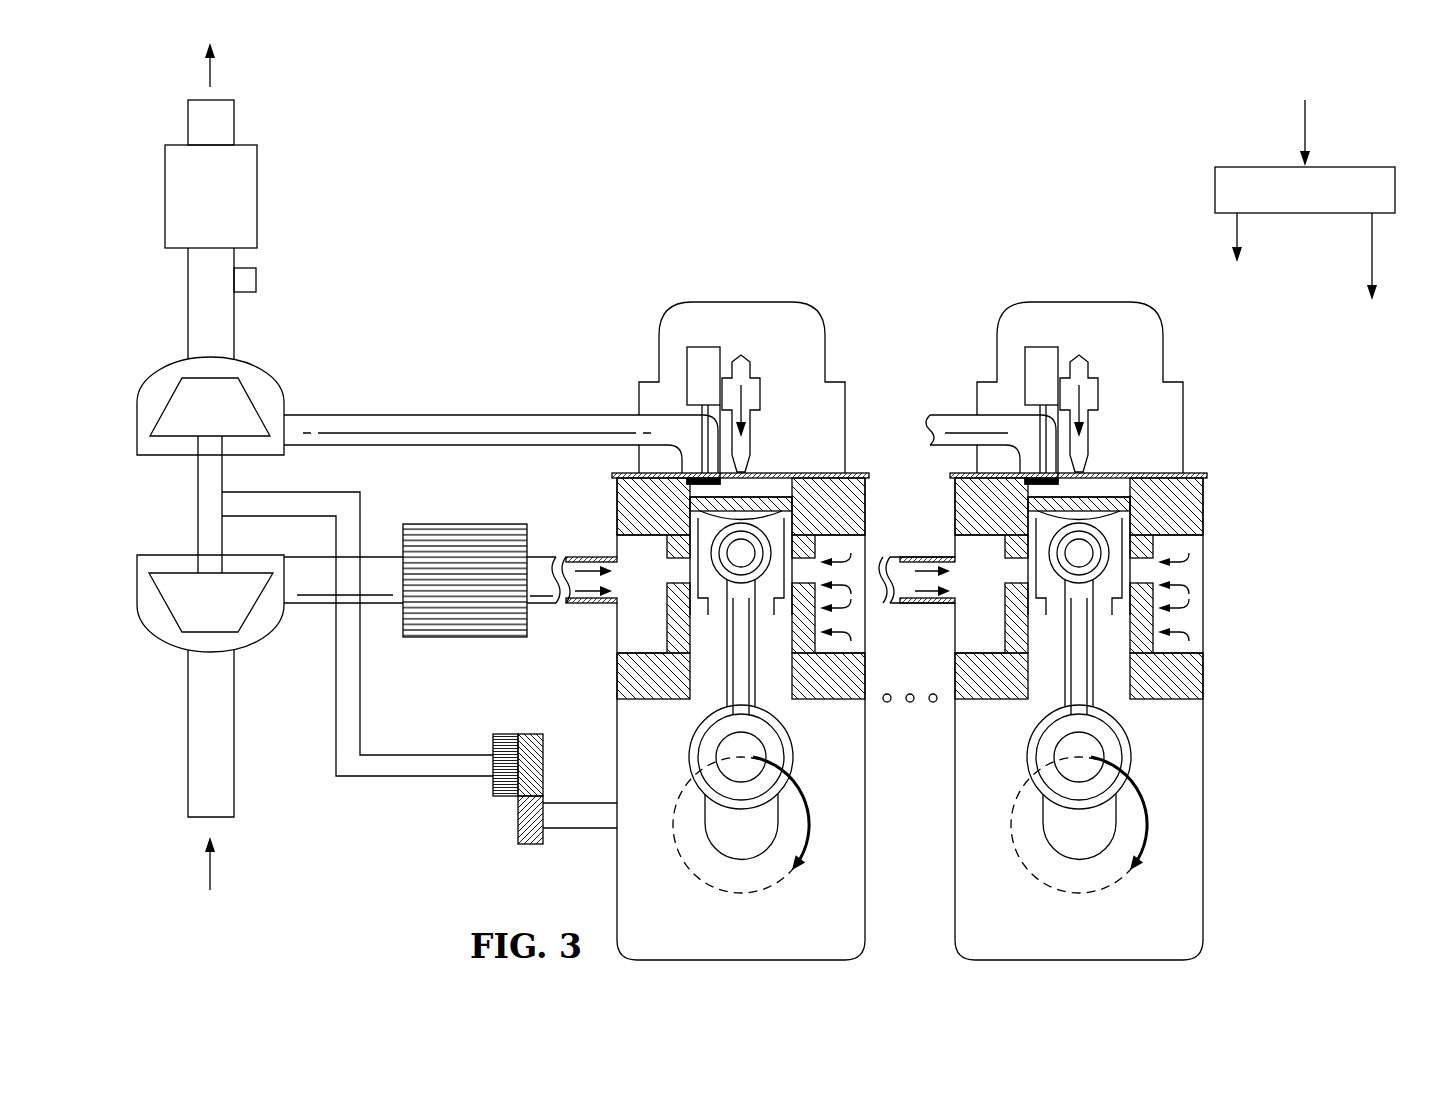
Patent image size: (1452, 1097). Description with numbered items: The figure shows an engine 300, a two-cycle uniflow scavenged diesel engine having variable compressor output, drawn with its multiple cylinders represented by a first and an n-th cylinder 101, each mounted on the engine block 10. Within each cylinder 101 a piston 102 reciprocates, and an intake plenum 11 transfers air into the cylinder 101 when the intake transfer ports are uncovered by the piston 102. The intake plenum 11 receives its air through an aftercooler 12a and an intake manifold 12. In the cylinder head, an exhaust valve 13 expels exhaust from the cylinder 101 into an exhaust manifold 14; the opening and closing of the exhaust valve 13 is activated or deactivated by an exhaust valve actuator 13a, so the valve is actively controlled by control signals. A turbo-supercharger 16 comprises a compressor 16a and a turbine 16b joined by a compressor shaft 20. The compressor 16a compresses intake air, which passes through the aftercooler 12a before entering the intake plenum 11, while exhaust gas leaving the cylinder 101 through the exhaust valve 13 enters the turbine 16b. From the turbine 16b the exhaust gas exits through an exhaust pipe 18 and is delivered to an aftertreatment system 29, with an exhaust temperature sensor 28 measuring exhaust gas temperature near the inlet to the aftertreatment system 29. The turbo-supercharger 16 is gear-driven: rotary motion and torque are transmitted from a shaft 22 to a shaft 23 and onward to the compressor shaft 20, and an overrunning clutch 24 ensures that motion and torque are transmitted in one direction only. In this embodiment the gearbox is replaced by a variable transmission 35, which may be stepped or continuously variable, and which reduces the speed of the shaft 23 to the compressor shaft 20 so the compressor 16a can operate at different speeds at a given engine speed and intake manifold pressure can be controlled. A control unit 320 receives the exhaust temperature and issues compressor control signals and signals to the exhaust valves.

The engine cylinder block 10 is at (866, 771).
The intake plenum 11 is at (857, 546).
The intake manifold 12 is at (548, 557).
The aftercooler 12a is at (436, 638).
The exhaust valve 13 is at (676, 430).
The exhaust valve actuator 13a is at (715, 345).
The exhaust manifold 14 is at (463, 415).
The turbo-supercharger 16 is at (122, 352).
The compressor 16a is at (232, 620).
The turbine 16b is at (232, 421).
The exhaust pipe 18 is at (187, 303).
The compressor shaft 20 is at (199, 500).
The shaft 22 is at (580, 829).
The shaft 23 is at (413, 778).
The overrunning clutch 24 is at (505, 734).
The exhaust temperature sensor 28 is at (258, 280).
The aftertreatment system 29 is at (165, 196).
The variable transmission 35 is at (533, 734).
The cylinder 101 is at (762, 288).
The piston 102 is at (762, 500).
The engine 300 is at (1128, 100).
The control unit 320 is at (1338, 166).